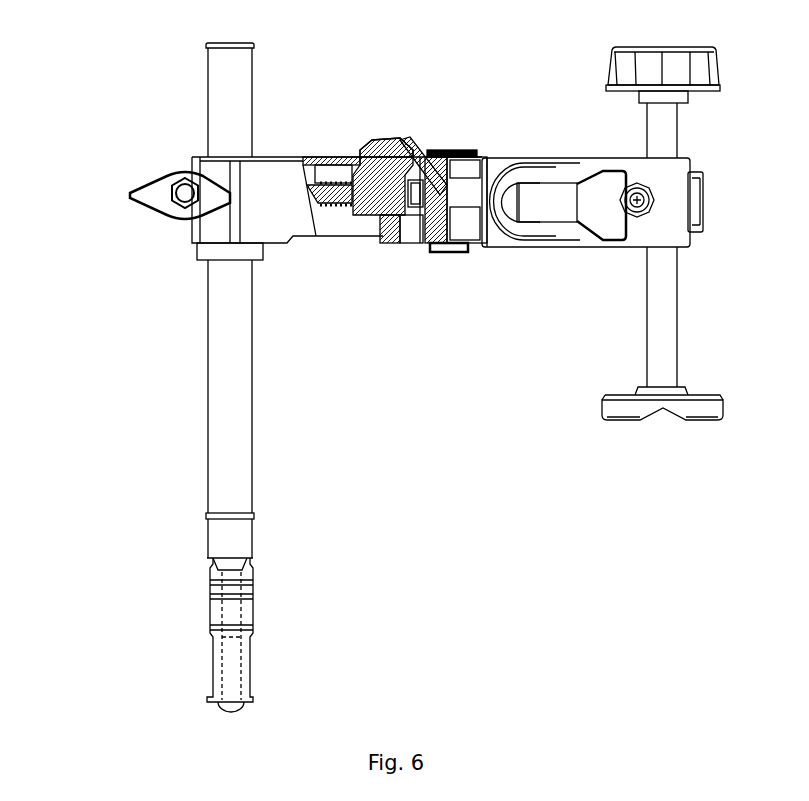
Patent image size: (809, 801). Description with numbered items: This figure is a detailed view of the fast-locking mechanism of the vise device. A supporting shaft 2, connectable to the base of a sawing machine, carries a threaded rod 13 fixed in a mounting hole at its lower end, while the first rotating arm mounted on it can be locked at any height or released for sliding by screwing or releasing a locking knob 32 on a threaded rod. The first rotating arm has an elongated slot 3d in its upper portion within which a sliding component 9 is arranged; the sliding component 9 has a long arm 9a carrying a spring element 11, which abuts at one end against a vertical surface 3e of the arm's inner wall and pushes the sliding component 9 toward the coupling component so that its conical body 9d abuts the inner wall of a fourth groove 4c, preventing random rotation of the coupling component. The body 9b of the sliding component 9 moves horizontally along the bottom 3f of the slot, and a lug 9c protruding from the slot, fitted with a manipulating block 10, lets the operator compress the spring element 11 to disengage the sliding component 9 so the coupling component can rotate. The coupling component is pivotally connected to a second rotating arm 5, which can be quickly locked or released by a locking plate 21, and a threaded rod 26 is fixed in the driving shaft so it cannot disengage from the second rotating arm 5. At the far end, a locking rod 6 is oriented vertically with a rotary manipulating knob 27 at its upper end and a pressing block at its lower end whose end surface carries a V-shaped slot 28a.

The supporting shaft 2 is at (220, 392).
The threaded rod 13 is at (230, 670).
The locking knob 32 is at (130, 192).
The elongated slot 3d is at (328, 173).
The vertical surface 3e is at (318, 207).
The bottom of the elongated slot 3f is at (396, 228).
The sliding component 9 is at (362, 212).
The long arm 9a is at (318, 210).
The body of the sliding component 9b is at (378, 213).
The lug 9c is at (401, 150).
The conical body 9d is at (428, 238).
The manipulating block 10 is at (405, 155).
The spring element 11 is at (330, 203).
The fourth groove 4c is at (460, 151).
The second rotating arm 5 is at (578, 238).
The locking plate 21 is at (551, 208).
The threaded rod 26 is at (633, 212).
The locking rod 6 is at (670, 292).
The rotary manipulating knob 27 is at (707, 70).
The V-shaped slot 28a is at (663, 410).